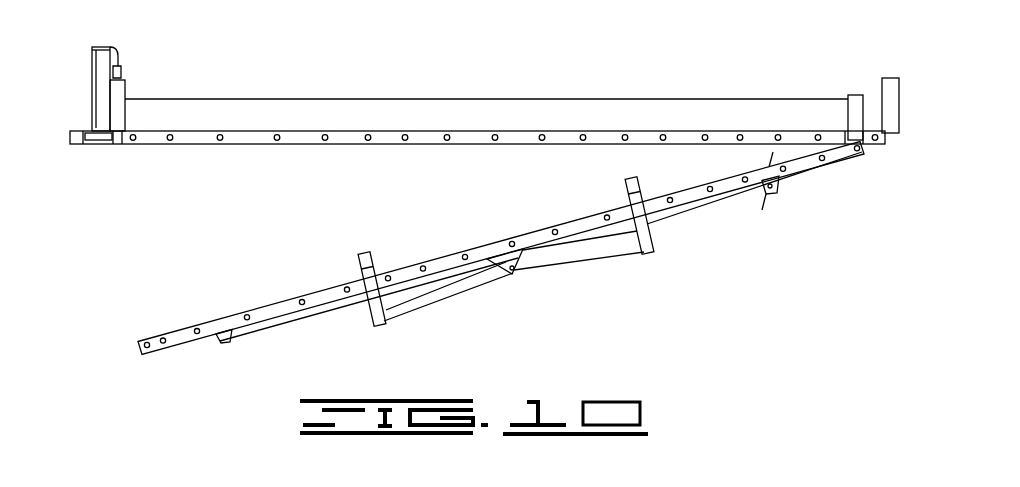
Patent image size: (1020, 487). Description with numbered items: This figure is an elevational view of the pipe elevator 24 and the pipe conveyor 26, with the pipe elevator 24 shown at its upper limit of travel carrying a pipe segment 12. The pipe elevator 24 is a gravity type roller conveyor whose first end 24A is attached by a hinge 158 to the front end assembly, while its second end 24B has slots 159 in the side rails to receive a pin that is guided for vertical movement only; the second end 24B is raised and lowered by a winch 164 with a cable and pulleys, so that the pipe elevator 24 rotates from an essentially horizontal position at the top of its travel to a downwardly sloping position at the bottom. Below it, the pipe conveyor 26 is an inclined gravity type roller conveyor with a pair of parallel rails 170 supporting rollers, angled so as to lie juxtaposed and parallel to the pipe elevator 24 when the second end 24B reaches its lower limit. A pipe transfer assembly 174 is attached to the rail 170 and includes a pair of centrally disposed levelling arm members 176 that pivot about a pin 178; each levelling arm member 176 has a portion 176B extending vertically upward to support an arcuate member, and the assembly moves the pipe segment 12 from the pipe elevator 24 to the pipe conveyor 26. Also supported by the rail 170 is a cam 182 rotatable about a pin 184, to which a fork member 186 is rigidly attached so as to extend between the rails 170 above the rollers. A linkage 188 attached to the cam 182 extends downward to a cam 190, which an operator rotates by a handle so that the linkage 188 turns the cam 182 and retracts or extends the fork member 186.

The pipe segment 12 is at (592, 110).
The pipe elevator 24 is at (382, 150).
The first end 24A is at (843, 118).
The second end 24B is at (145, 144).
The pipe conveyor 26 is at (310, 287).
The hinge 158 is at (870, 146).
The slots 159 is at (100, 142).
The winch 164 is at (122, 30).
The rails 170 is at (283, 308).
The pipe transfer assembly 174 is at (503, 296).
The levelling arm members 176 is at (572, 258).
The vertically extending portion 176B is at (368, 328).
The pin 178 is at (516, 277).
The cam 182 is at (766, 198).
The pin 184 is at (774, 186).
The fork member 186 is at (768, 158).
The linkage 188 is at (708, 213).
The cam 190 is at (220, 341).